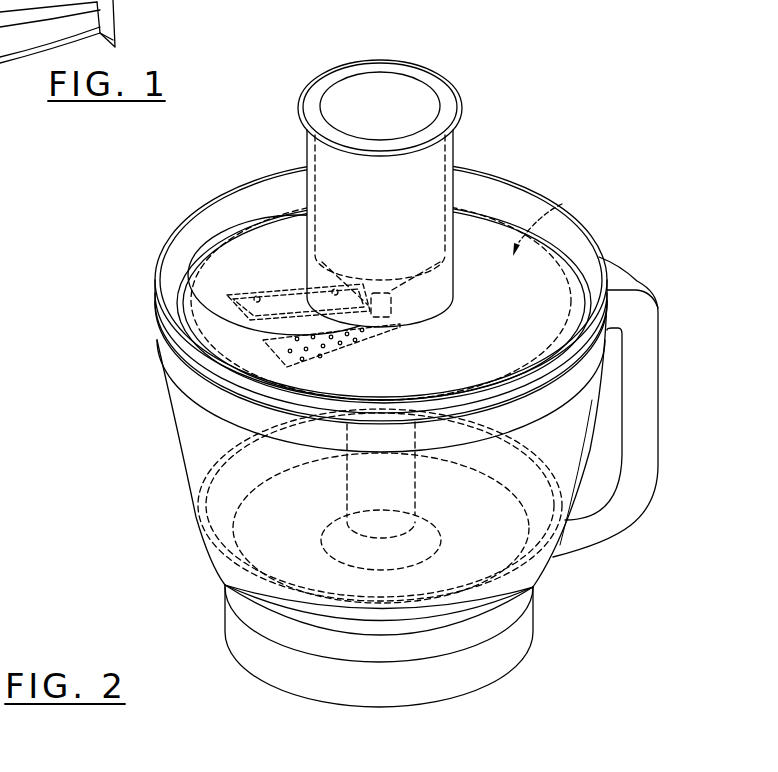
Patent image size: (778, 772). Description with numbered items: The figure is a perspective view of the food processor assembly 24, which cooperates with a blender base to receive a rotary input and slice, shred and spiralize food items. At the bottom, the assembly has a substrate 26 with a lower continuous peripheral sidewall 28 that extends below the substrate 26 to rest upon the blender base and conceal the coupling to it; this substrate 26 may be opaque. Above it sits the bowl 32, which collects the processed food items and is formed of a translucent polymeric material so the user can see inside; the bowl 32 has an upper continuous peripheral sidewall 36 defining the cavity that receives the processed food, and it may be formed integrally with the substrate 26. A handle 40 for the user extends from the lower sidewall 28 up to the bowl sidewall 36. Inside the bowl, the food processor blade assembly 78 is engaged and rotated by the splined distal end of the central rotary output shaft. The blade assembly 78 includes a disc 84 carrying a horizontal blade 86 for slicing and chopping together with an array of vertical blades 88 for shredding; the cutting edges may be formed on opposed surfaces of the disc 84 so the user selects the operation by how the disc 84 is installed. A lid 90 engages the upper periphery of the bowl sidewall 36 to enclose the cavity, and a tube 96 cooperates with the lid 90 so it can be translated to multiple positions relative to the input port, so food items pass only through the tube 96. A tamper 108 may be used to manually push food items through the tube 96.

The food processor assembly 24 is at (400, 353).
The substrate 26 is at (533, 587).
The lower continuous peripheral sidewall 28 is at (498, 658).
The bowl 32 is at (228, 505).
The upper continuous peripheral sidewall 36 is at (192, 439).
The handle 40 is at (637, 283).
The food processor blade assembly 78 is at (566, 230).
The disc 84 is at (579, 223).
The horizontal blade 86 is at (227, 295).
The vertical blades 88 is at (262, 341).
The lid 90 is at (507, 210).
The tube 96 is at (402, 163).
The tamper 108 is at (398, 70).